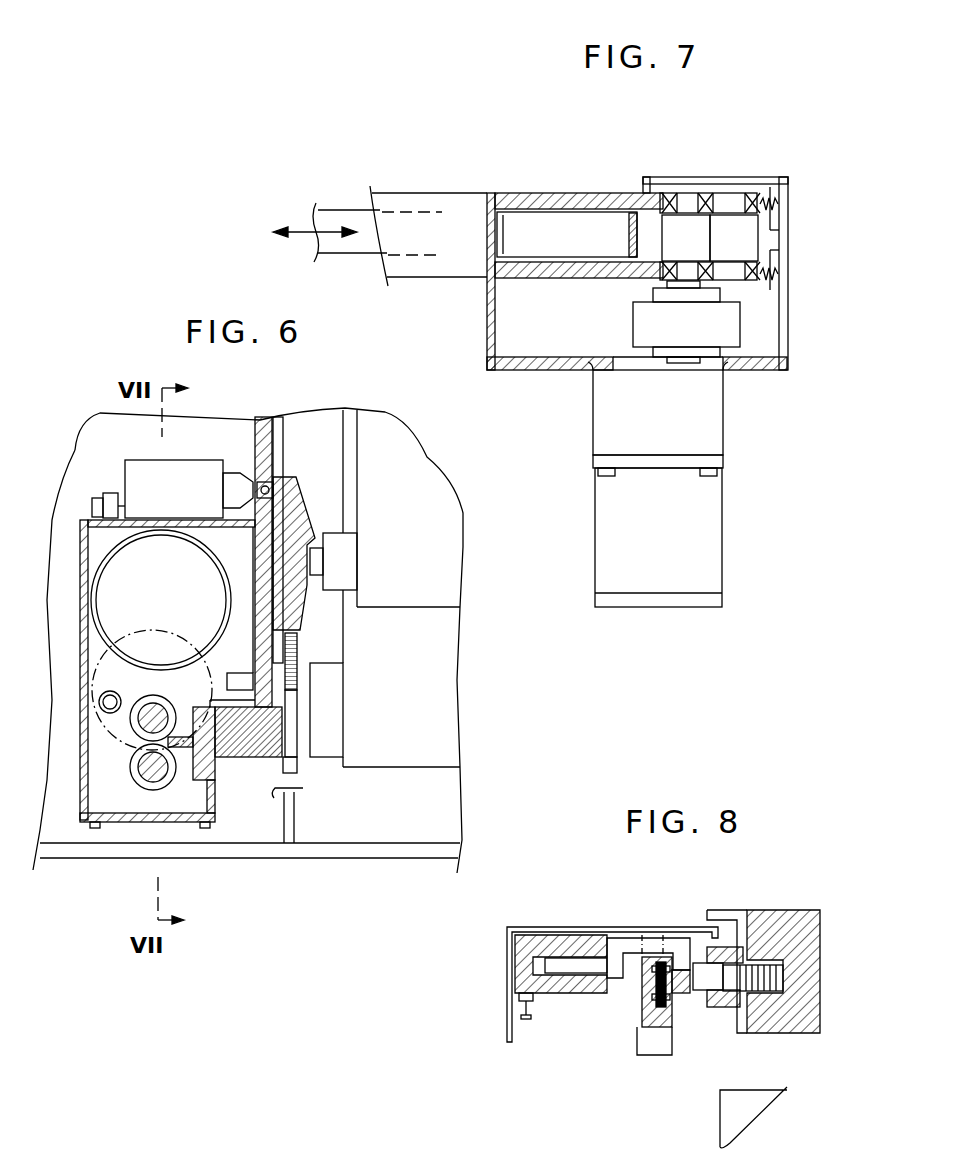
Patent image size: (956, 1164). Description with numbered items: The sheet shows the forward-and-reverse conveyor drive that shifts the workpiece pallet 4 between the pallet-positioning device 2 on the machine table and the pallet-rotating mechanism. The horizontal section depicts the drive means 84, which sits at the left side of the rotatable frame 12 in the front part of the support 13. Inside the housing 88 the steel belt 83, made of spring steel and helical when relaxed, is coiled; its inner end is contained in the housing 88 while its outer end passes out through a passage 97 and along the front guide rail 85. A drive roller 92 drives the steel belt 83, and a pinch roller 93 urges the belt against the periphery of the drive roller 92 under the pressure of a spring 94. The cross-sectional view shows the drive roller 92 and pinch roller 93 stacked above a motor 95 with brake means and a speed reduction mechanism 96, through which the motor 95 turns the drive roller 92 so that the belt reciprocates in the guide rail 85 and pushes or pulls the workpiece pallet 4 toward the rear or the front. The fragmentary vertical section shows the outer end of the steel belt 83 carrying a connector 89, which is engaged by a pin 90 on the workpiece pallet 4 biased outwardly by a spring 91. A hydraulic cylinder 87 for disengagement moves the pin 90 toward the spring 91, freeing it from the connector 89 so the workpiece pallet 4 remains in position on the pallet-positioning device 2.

In FIG. 8, the pallet-positioning device 2 is at (743, 1107).
In FIG. 6, the workpiece pallet 4 is at (445, 558).
In FIG. 8, the workpiece pallet 4 is at (803, 944).
In FIG. 6, the rotatable frame 12 is at (435, 668).
In FIG. 6, the support 13 is at (247, 850).
In FIG. 7, the steel belt 83 is at (336, 210).
In FIG. 6, the steel belt 83 is at (212, 577).
In FIG. 8, the steel belt 83 is at (647, 992).
In FIG. 7, the drive means 84 is at (772, 166).
In FIG. 6, the drive means 84 is at (143, 825).
In FIG. 7, the front guide rail 85 is at (420, 192).
In FIG. 6, the front guide rail 85 is at (258, 433).
In FIG. 8, the front guide rail 85 is at (650, 1017).
In FIG. 8, the cylinder for disengagement 87 is at (570, 940).
In FIG. 7, the housing 88 is at (590, 196).
In FIG. 6, the housing 88 is at (213, 518).
In FIG. 6, the connector 89 is at (300, 517).
In FIG. 8, the connector 89 is at (683, 993).
In FIG. 6, the pin 90 is at (318, 562).
In FIG. 8, the pin 90 is at (713, 983).
In FIG. 8, the spring 91 is at (773, 967).
In FIG. 7, the drive roller 92 is at (686, 232).
In FIG. 6, the drive roller 92 is at (160, 712).
In FIG. 7, the pinch roller 93 is at (731, 235).
In FIG. 6, the pinch roller 93 is at (147, 767).
In FIG. 7, the spring 94 is at (782, 210).
In FIG. 7, the motor 95 is at (715, 528).
In FIG. 6, the motor 95 is at (235, 645).
In FIG. 7, the speed reduction mechanism 96 is at (710, 420).
In FIG. 6, the passage 97 is at (262, 757).